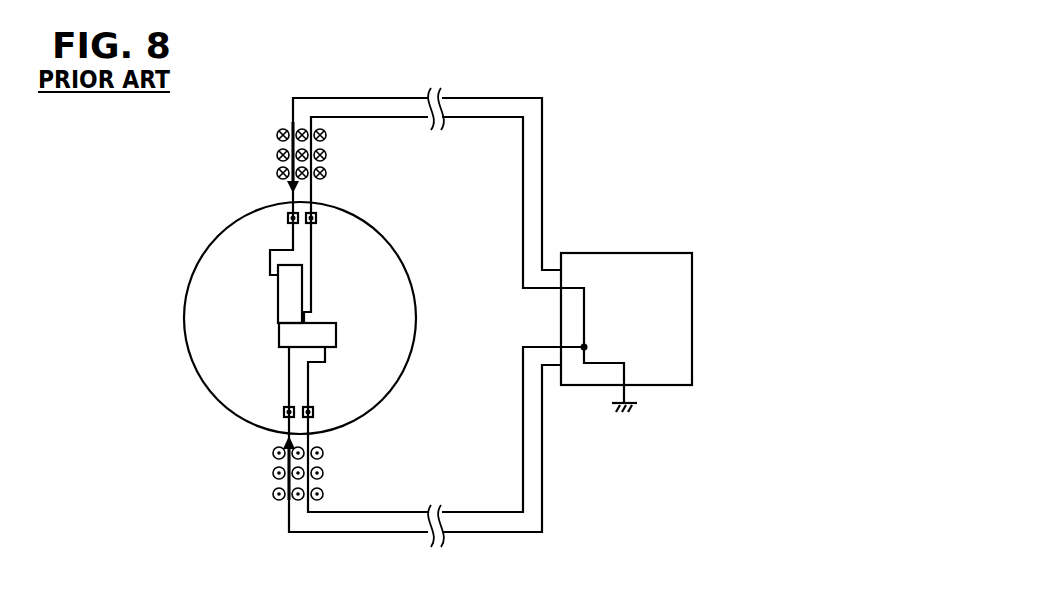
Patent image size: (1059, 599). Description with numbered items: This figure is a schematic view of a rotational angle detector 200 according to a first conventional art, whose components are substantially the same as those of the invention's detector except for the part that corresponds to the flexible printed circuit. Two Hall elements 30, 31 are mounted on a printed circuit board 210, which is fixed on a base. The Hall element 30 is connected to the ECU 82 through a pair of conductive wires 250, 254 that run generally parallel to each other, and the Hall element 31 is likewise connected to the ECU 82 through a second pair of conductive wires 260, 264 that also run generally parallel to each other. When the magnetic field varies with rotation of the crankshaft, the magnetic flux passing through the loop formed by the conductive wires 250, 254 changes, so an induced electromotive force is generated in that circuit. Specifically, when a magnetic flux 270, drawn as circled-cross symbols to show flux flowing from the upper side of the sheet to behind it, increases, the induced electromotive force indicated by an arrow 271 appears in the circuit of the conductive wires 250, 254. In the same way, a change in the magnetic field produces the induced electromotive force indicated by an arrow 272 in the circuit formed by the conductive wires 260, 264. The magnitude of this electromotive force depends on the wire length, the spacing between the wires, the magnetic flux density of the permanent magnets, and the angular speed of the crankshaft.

The rotational angle detector 200 is at (677, 86).
The printed circuit board 210 is at (215, 262).
The Hall element 30 is at (283, 300).
The Hall element 31 is at (328, 334).
The conductive wire 250 is at (376, 97).
The conductive wire 254 is at (373, 120).
The conductive wire 260 is at (378, 535).
The conductive wire 264 is at (378, 512).
The magnetic flux 270 is at (298, 130).
The arrow 271 is at (285, 186).
The arrow 272 is at (283, 438).
The ECU 82 is at (607, 252).